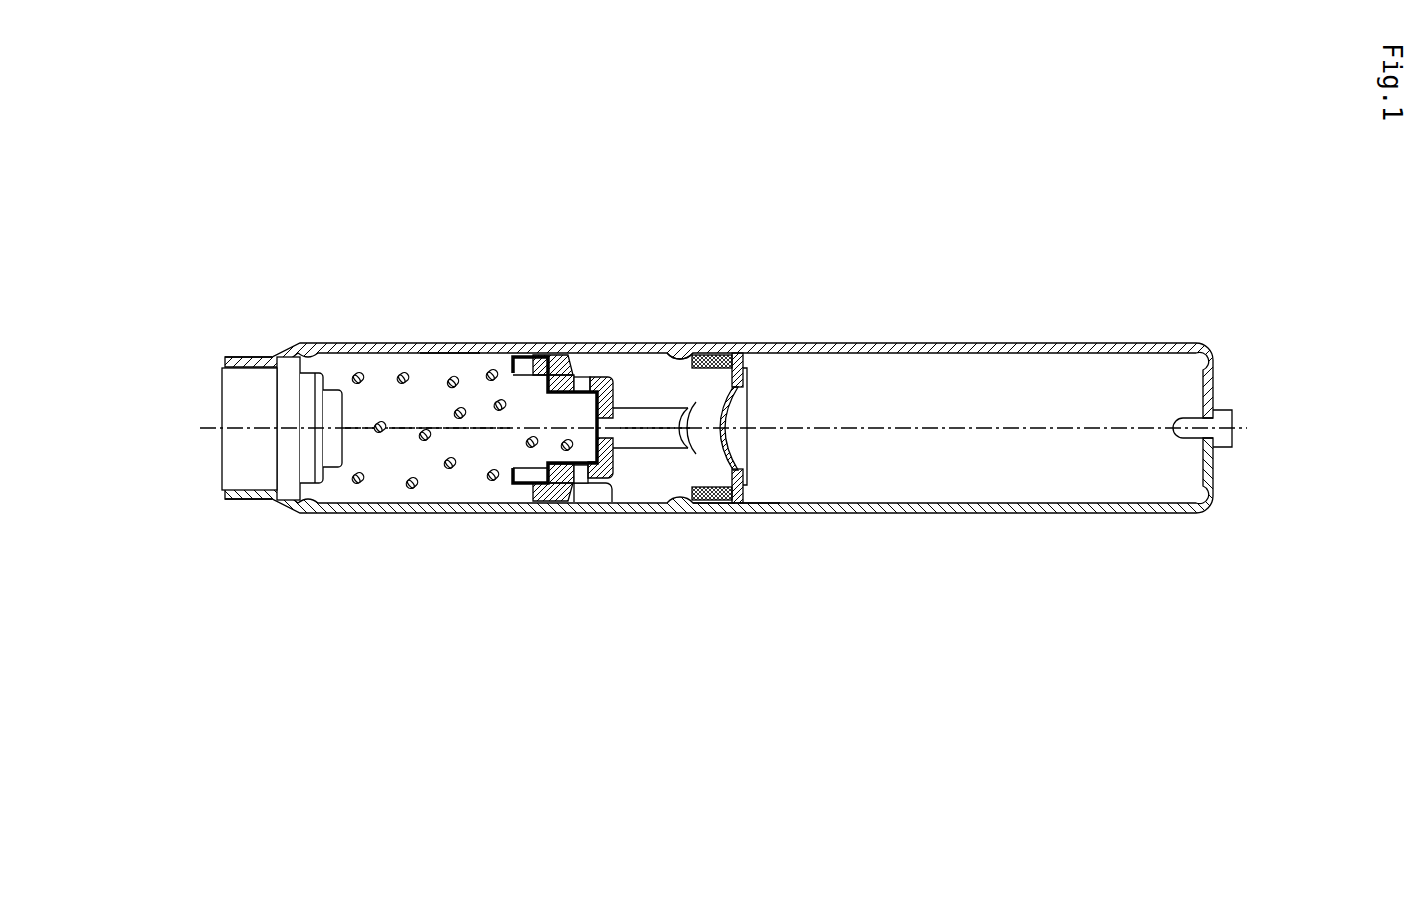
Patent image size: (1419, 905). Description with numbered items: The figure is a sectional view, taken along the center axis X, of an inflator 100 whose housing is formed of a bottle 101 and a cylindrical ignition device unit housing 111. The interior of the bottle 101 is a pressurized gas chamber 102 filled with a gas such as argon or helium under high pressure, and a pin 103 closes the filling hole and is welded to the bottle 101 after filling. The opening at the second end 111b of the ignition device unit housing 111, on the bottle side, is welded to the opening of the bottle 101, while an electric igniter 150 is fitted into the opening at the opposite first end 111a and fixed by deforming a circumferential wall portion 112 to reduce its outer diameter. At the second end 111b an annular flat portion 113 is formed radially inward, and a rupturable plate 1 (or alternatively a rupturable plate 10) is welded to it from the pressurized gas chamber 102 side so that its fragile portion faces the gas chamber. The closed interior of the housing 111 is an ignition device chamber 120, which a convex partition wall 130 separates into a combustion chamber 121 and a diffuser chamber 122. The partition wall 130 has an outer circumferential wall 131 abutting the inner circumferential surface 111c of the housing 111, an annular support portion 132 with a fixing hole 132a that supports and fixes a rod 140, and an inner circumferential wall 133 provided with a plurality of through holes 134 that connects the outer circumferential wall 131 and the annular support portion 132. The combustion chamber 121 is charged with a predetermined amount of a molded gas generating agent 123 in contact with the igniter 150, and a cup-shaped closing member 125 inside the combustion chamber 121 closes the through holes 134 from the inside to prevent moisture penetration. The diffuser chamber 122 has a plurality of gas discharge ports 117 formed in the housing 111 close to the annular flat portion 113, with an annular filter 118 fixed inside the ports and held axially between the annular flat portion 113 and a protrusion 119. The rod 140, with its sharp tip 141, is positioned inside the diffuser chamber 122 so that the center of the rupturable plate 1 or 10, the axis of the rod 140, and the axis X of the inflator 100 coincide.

The rupturable plate 1 is at (797, 428).
The rupturable plate 10 is at (737, 446).
The inflator 100 is at (807, 343).
The bottle 101 is at (963, 344).
The pressurized gas chamber 102 is at (957, 413).
The pin 103 is at (1218, 410).
The cylindrical ignition device unit housing 111 is at (393, 345).
The first end 111a is at (748, 496).
The second end 111b is at (227, 497).
The inner circumferential surface 111c is at (452, 364).
The circumferential wall portion 112 is at (242, 358).
The annular flat portion 113 is at (745, 364).
The gas discharge ports 117 is at (713, 508).
The annular filter 118 is at (733, 355).
The protrusion 119 is at (682, 354).
The ignition device chamber 120 is at (580, 577).
The combustion chamber 121 is at (465, 492).
The diffuser chamber 122 is at (587, 493).
The gas generating agent 123 is at (364, 483).
The cup-shaped closing member 125 is at (536, 483).
The convex partition wall 130 is at (609, 481).
The outer circumferential wall 131 is at (543, 355).
The annular support portion 132 is at (610, 383).
The fixing hole 132a is at (592, 425).
The inner circumferential wall 133 is at (573, 378).
The through holes 134 is at (584, 377).
The rod 140 is at (668, 450).
The sharp tip 141 is at (690, 428).
The electric igniter 150 is at (232, 393).